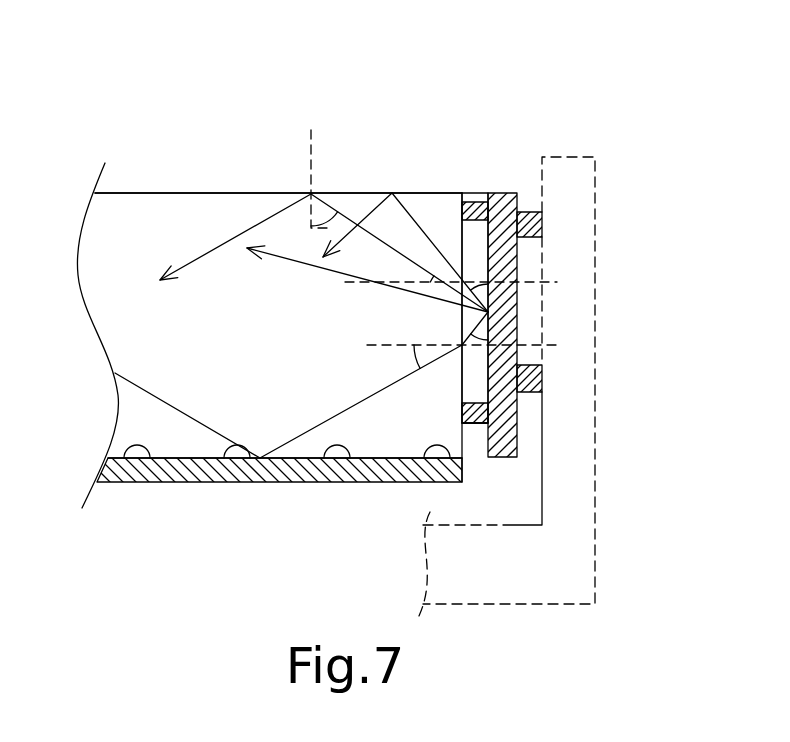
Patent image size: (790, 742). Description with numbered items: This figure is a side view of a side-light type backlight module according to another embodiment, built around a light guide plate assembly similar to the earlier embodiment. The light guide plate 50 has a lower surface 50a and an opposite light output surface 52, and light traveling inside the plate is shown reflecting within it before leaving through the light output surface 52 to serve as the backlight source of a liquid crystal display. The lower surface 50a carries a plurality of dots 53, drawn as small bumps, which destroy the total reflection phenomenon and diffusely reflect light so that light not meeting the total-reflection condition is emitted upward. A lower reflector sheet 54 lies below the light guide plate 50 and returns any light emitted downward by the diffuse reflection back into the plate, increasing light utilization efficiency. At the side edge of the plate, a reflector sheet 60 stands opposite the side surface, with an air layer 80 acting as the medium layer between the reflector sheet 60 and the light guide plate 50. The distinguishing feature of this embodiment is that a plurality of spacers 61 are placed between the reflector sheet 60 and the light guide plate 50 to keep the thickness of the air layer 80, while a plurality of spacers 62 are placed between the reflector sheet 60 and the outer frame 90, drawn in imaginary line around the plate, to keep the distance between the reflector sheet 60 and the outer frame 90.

The light guide plate 50 is at (148, 168).
The lower surface 50a is at (152, 468).
The light output surface 52 is at (195, 193).
The dots 53 is at (335, 456).
The lower reflector sheet 54 is at (213, 470).
The reflector sheet 60 is at (508, 413).
The spacers 61 is at (478, 210).
The spacers 62 is at (533, 225).
The air layer 80 is at (470, 447).
The outer frame 90 is at (568, 157).